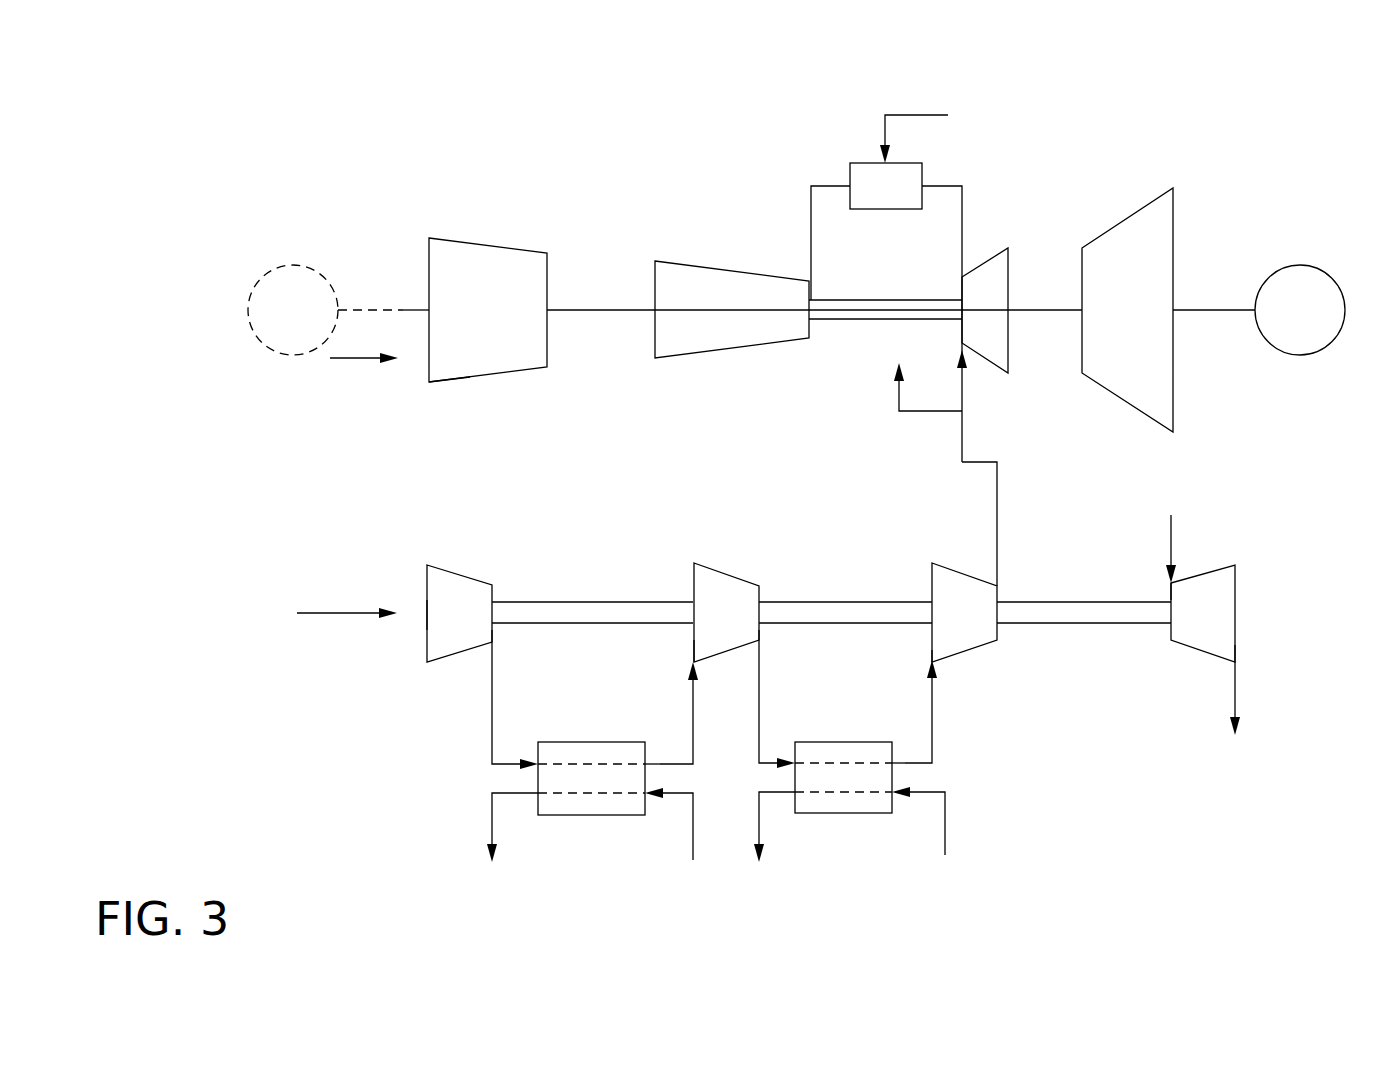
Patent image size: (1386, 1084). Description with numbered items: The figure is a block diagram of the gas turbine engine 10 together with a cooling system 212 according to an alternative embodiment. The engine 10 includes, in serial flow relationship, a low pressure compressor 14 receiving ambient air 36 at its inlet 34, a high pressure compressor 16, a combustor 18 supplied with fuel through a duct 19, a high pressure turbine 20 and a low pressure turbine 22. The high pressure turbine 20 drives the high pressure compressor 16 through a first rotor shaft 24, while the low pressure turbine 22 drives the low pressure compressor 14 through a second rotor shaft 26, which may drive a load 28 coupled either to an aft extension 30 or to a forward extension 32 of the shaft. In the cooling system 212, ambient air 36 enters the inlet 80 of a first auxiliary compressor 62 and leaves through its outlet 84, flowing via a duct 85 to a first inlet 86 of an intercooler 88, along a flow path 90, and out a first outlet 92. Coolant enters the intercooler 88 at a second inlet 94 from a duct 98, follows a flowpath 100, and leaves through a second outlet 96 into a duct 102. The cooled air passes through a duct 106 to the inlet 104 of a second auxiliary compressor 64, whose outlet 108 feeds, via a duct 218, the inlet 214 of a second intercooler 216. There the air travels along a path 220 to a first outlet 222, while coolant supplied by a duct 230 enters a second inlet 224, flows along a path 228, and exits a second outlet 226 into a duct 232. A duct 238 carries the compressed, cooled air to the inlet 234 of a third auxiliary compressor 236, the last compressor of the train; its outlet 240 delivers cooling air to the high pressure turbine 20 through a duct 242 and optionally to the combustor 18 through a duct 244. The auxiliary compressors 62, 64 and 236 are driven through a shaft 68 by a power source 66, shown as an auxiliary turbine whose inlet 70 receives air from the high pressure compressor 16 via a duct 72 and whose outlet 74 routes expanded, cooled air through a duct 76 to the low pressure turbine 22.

The gas turbine engine 10 is at (1287, 130).
The low pressure compressor 14 is at (473, 240).
The high pressure compressor 16 is at (717, 272).
The combustor 18 is at (860, 163).
The duct 19 is at (912, 115).
The high pressure turbine 20 is at (1006, 248).
The low pressure turbine 22 is at (1124, 217).
The first rotor shaft 24 is at (853, 300).
The second rotor shaft 26 is at (1068, 308).
The load 28 is at (270, 265).
The aft extension 30 is at (1203, 308).
The forward extension 32 is at (356, 310).
The inlet 34 is at (430, 372).
The ambient air 36 is at (352, 362).
The first auxiliary compressor 62 is at (448, 552).
The second auxiliary compressor 64 is at (723, 552).
The power source 66 is at (1208, 553).
The shaft 68 is at (566, 600).
The inlet 70 is at (1171, 590).
The duct 72 is at (1171, 520).
The outlet 74 is at (1235, 662).
The duct 76 is at (1235, 689).
The inlet 80 is at (428, 612).
The outlet 84 is at (492, 641).
The duct 85 is at (492, 697).
The first inlet 86 is at (538, 766).
The intercooler 88 is at (544, 730).
The flow path 90 is at (617, 762).
The first outlet 92 is at (670, 728).
The second inlet 94 is at (650, 789).
The second outlet 96 is at (540, 798).
The duct 98 is at (693, 848).
The flowpath 100 is at (588, 795).
The duct 102 is at (490, 820).
The inlet 104 is at (694, 660).
The duct 106 is at (693, 718).
The outlet 108 is at (759, 641).
The cooling system 212 is at (303, 740).
The inlet 214 is at (792, 762).
The second intercooler 216 is at (905, 777).
The duct 218 is at (760, 702).
The path 220 is at (848, 762).
The first outlet 222 is at (912, 722).
The second inlet 224 is at (893, 796).
The second outlet 226 is at (795, 798).
The path 228 is at (848, 795).
The duct 230 is at (947, 828).
The duct 232 is at (762, 832).
The inlet 234 is at (935, 662).
The third auxiliary compressor 236 is at (958, 553).
The duct 238 is at (932, 704).
The outlet 240 is at (998, 585).
The duct 242 is at (999, 490).
The duct 244 is at (918, 413).